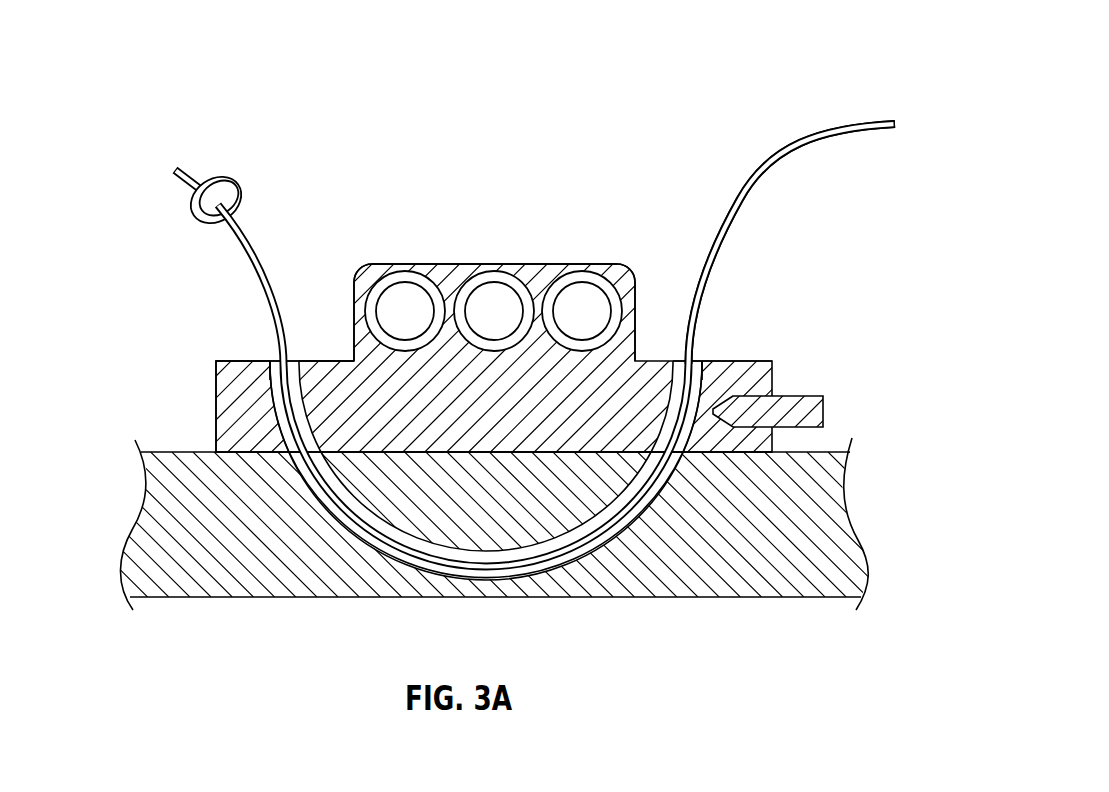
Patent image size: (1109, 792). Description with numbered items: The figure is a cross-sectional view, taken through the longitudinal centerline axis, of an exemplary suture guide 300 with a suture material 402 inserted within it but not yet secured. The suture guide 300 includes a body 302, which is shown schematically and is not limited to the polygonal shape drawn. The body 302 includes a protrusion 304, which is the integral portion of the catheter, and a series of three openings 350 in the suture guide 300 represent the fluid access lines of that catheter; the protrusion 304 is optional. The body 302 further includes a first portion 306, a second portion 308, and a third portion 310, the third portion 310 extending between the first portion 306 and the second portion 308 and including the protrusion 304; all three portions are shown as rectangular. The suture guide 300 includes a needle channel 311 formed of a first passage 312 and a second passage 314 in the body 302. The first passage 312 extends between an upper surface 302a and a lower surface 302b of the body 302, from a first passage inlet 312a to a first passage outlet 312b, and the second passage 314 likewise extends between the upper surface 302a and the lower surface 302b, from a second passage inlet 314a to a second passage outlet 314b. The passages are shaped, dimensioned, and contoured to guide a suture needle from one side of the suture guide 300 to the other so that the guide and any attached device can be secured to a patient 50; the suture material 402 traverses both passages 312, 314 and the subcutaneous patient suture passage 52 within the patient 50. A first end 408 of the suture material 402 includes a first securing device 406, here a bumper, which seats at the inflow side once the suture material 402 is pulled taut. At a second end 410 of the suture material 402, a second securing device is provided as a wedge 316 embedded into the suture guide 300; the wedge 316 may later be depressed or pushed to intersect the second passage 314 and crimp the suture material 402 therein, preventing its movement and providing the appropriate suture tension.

The suture guide 300 is at (508, 343).
The patient 50 is at (743, 580).
The patient suture passage 52 is at (390, 556).
The body 302 is at (507, 418).
The upper surface 302a is at (494, 271).
The lower surface 302b is at (527, 452).
The protrusion 304 is at (450, 276).
The first portion 306 is at (250, 360).
The second portion 308 is at (486, 376).
The third portion 310 is at (422, 432).
The needle channel 311 is at (271, 421).
The first passage 312 is at (280, 434).
The first passage inlet 312a is at (273, 361).
The first passage outlet 312b is at (306, 470).
The second passage 314 is at (702, 423).
The second passage inlet 314a is at (673, 456).
The second passage outlet 314b is at (698, 361).
The wedge 316 is at (823, 413).
The openings 350 is at (402, 270).
The suture material 402 is at (782, 152).
The first securing device 406 is at (226, 173).
The first end 408 is at (185, 168).
The second end 410 is at (686, 301).